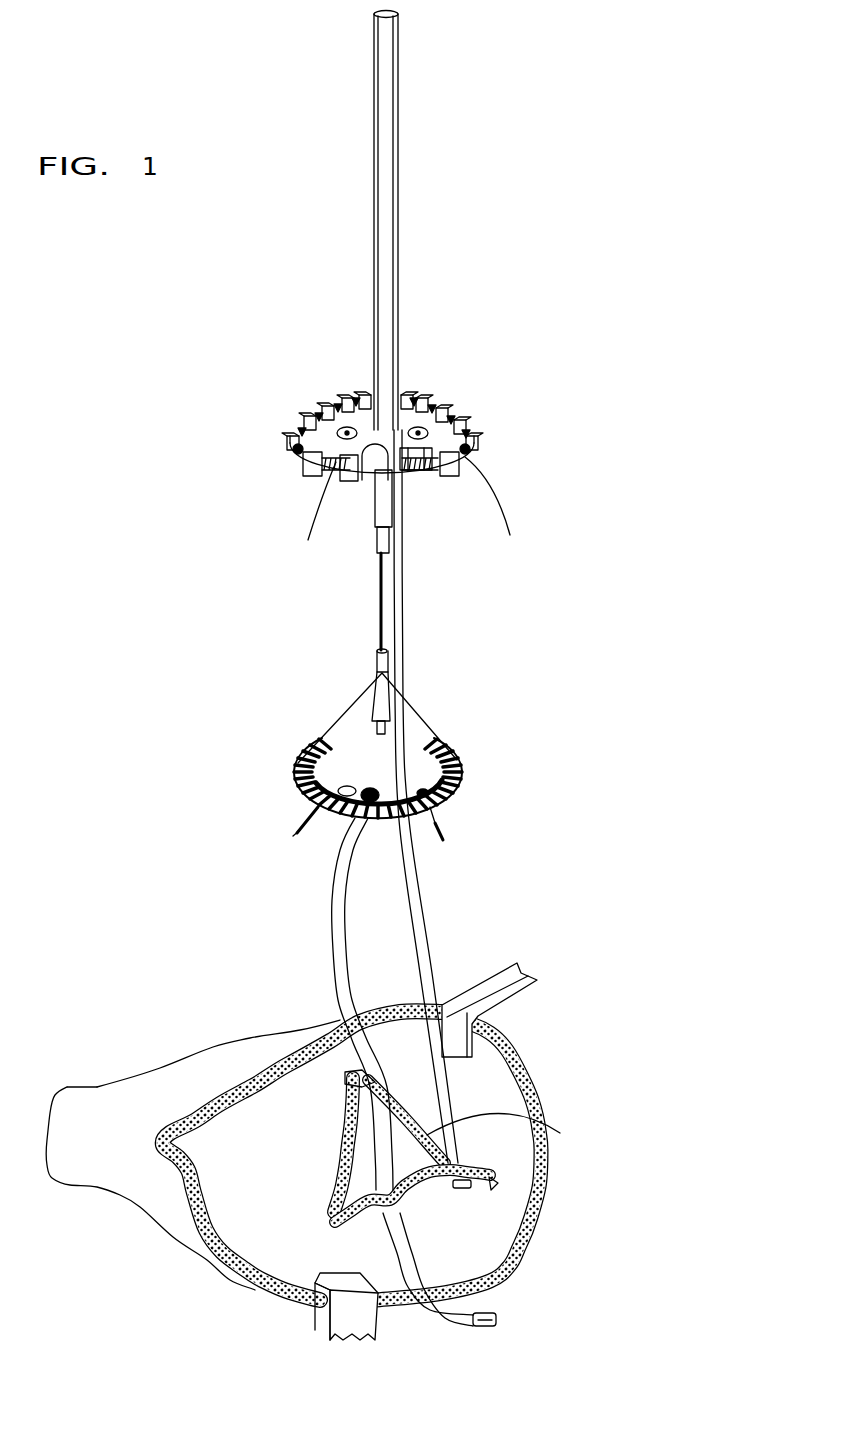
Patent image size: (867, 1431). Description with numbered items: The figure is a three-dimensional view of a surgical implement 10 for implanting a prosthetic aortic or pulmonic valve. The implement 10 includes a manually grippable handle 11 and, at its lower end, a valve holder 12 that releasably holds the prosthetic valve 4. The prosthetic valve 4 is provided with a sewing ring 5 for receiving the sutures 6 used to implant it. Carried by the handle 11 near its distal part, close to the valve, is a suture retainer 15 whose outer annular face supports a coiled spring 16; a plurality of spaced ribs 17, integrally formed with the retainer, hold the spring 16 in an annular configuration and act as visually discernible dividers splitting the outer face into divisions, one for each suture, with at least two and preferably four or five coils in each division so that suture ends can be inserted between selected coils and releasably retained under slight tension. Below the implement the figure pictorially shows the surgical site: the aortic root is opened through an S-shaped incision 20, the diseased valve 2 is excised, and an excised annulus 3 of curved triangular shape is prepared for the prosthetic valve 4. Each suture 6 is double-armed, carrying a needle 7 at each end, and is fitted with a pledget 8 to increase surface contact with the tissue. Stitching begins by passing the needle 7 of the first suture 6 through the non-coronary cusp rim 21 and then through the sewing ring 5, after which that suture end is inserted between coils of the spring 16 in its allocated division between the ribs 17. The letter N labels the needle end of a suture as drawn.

The surgical implement 10 is at (280, 360).
The manually grippable handle 11 is at (398, 182).
The suture retainer 15 is at (358, 413).
The coiled spring 16 is at (298, 457).
The spaced ribs 17 is at (450, 476).
The valve holder 12 is at (358, 715).
The prosthetic valve 4 is at (413, 722).
The sewing ring 5 is at (462, 760).
The needle 7 is at (382, 830).
The needle N is at (448, 835).
The suture 6 is at (334, 916).
The diseased valve 2 is at (278, 1140).
The excised annulus 3 is at (501, 1134).
The non-coronary cusp rim 21 is at (413, 1183).
The S-shaped incision 20 is at (253, 1275).
The pledget 8 is at (496, 1322).